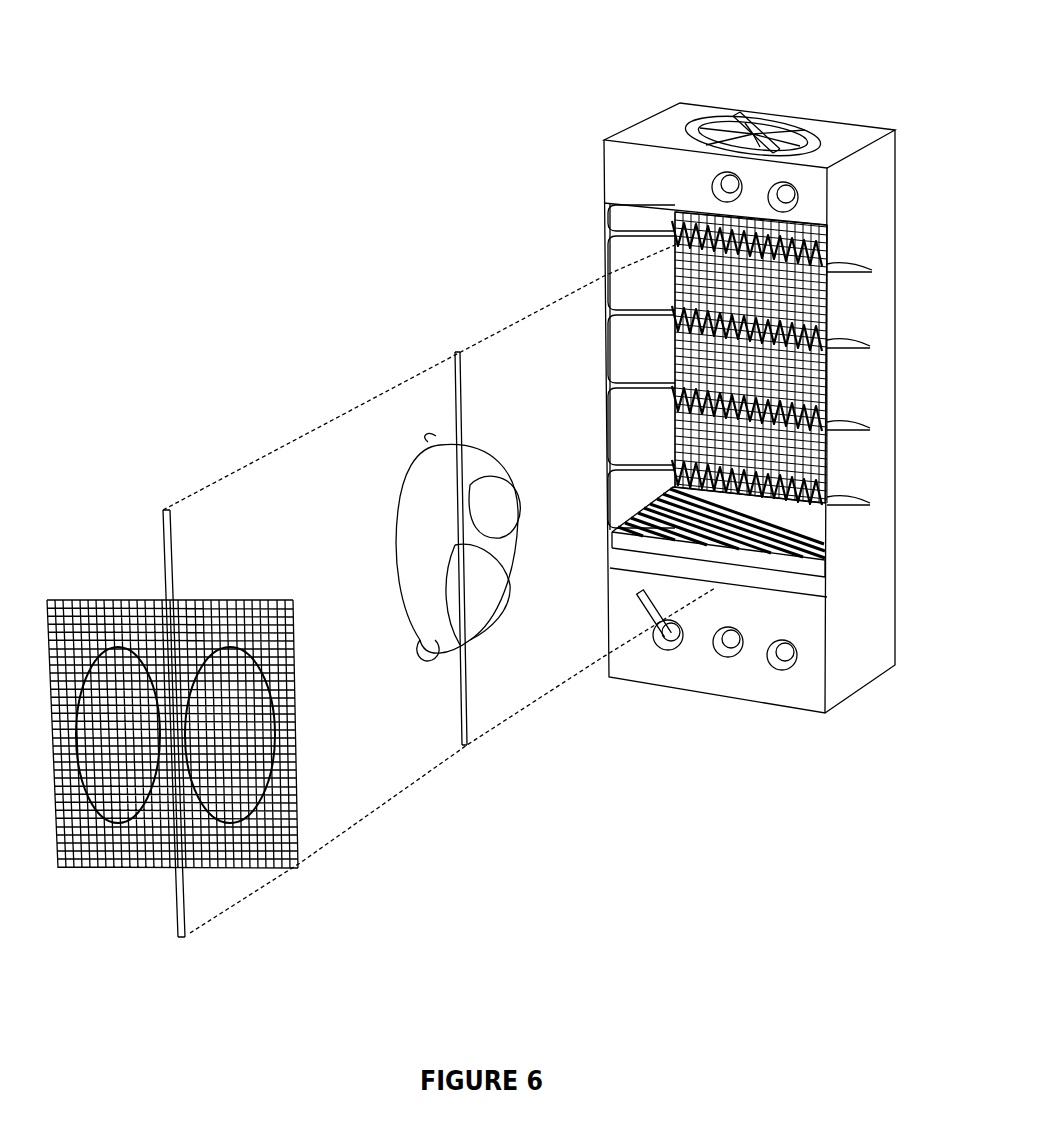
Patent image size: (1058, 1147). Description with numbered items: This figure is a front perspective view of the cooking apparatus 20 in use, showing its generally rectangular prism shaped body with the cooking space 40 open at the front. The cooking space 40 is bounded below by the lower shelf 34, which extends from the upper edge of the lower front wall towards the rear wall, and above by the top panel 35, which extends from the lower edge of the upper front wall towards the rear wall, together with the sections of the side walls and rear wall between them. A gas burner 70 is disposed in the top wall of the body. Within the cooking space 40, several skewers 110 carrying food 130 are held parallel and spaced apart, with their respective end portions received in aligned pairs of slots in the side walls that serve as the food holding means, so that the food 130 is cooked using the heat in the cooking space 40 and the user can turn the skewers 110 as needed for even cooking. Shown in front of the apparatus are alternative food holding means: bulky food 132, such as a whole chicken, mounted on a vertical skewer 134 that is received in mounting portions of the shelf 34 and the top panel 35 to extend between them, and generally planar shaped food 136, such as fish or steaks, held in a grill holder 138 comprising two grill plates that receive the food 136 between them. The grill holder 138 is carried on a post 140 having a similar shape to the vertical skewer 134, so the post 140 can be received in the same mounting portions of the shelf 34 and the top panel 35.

The cooking apparatus 20 is at (780, 92).
The lower shelf 34 is at (810, 597).
The top panel 35 is at (633, 205).
The cooking space 40 is at (640, 352).
The gas burner 70 is at (735, 115).
The skewer 110 is at (870, 346).
The food 130 is at (667, 312).
The bulky food 132 is at (438, 488).
The vertical skewer 134 is at (458, 372).
The planar shaped food 136 is at (270, 738).
The grill holder 138 is at (238, 604).
The post 140 is at (162, 510).